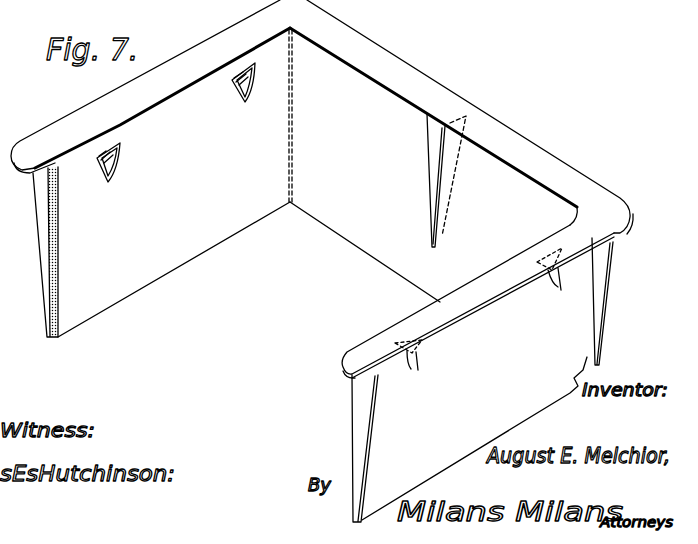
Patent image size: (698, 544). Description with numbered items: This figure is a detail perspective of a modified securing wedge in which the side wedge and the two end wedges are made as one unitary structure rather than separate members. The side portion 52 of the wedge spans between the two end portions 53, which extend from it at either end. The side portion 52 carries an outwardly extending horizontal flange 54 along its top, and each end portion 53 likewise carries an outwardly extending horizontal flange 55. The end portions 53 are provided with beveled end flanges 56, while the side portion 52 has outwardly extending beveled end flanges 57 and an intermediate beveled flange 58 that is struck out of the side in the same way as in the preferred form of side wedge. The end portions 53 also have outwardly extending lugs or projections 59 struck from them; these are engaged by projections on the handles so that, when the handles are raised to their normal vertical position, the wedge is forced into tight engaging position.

The side portion of the wedge 52 is at (370, 250).
The end portions of the wedge 53 is at (205, 243).
The horizontal flange of the side portion 54 is at (563, 173).
The horizontal flange of the end portions 55 is at (203, 47).
The beveled end flanges 56 is at (41, 250).
The beveled end flanges of the side portion 57 is at (297, 105).
The intermediate beveled flange 58 is at (447, 190).
The lugs or projections 59 is at (115, 160).